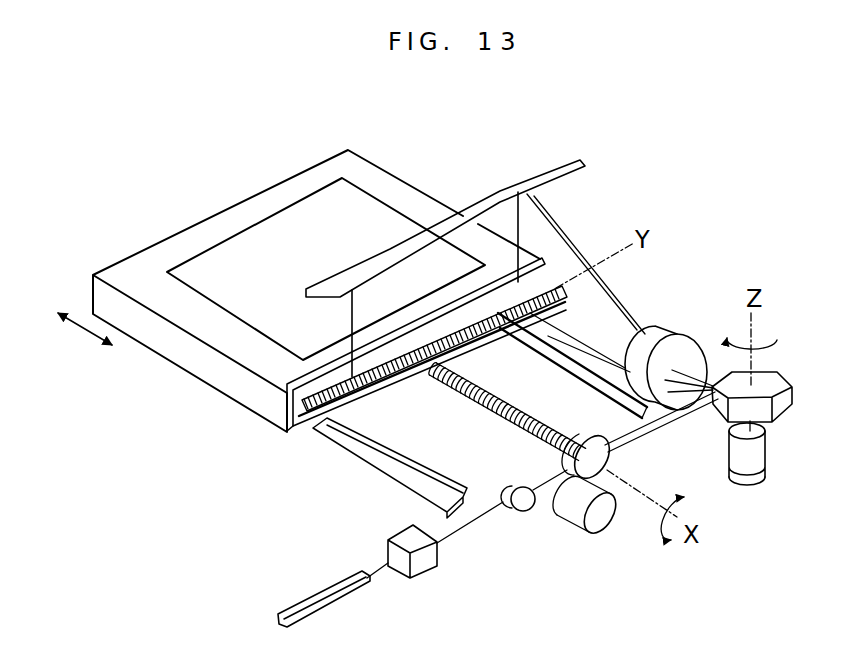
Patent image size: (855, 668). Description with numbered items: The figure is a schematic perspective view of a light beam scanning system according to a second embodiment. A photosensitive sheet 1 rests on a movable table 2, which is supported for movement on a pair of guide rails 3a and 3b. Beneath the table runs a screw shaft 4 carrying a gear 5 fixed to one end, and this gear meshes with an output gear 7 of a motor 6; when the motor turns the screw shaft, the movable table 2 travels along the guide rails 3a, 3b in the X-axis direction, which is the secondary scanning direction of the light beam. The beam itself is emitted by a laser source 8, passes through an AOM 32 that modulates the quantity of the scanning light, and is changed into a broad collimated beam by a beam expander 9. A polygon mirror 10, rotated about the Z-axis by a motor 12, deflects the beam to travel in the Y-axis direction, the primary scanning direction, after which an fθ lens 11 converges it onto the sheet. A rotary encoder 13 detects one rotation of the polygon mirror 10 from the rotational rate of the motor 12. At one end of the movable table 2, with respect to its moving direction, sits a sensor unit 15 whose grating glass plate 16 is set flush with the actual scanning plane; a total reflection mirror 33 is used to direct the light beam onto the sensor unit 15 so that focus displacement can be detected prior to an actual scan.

The photosensitive sheet 1 is at (246, 300).
The movable table 2 is at (193, 358).
The guide rail 3a is at (397, 438).
The guide rail 3b is at (567, 383).
The screw shaft 4 is at (508, 423).
The gear 5 is at (615, 468).
The motor 6 is at (603, 522).
The output gear 7 is at (563, 493).
The laser source 8 is at (357, 593).
The beam expander 9 is at (512, 511).
The polygon mirror 10 is at (797, 397).
The fθ lens 11 is at (677, 331).
The motor 12 is at (763, 450).
The rotary encoder 13 is at (755, 480).
The sensor unit 15 is at (307, 437).
The grating glass plate 16 is at (333, 422).
The AOM 32 is at (422, 568).
The total reflection mirror 33 is at (574, 162).